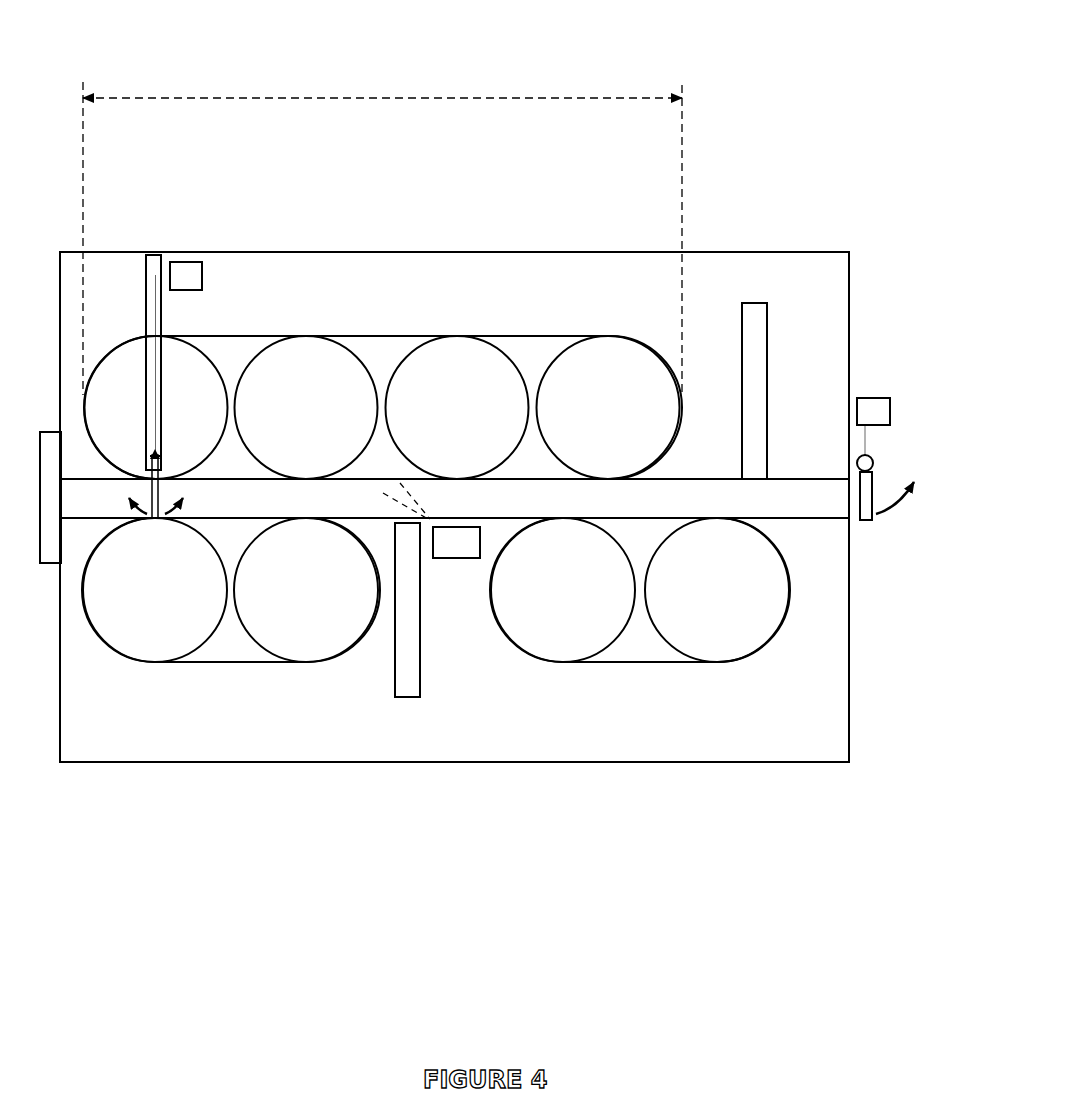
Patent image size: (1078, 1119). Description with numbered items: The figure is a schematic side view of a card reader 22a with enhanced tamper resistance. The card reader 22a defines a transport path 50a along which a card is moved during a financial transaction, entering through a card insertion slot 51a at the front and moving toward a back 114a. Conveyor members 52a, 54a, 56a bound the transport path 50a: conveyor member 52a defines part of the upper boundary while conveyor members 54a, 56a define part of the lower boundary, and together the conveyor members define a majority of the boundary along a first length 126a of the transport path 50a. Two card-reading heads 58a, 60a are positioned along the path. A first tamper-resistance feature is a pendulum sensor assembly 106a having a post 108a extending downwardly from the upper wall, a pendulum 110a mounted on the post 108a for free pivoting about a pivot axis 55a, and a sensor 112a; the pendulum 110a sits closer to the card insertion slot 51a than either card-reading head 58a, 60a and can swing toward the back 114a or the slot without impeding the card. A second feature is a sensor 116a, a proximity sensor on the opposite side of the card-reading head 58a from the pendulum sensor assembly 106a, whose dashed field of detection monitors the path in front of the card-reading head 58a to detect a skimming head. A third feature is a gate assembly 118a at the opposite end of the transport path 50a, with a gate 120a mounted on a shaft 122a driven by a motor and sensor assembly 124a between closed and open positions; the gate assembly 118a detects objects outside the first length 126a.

The card reader 22a is at (790, 96).
The first length 126a is at (478, 98).
The pendulum sensor assembly 106a is at (256, 205).
The post 108a is at (144, 254).
The sensor 112a is at (178, 262).
The conveyor member 52a is at (352, 334).
The pivot axis 55a is at (164, 456).
The pendulum 110a is at (164, 474).
The card-reading head 60a is at (753, 324).
The gate assembly 118a is at (875, 240).
The motor and sensor assembly 124a is at (870, 410).
The shaft 122a is at (863, 461).
The gate 120a is at (867, 520).
The transport path 50a is at (454, 499).
The card insertion slot 51a is at (53, 566).
The conveyor member 54a is at (214, 679).
The card-reading head 58a is at (406, 676).
The sensor 116a is at (452, 546).
The conveyor member 56a is at (662, 702).
The back 114a is at (848, 712).